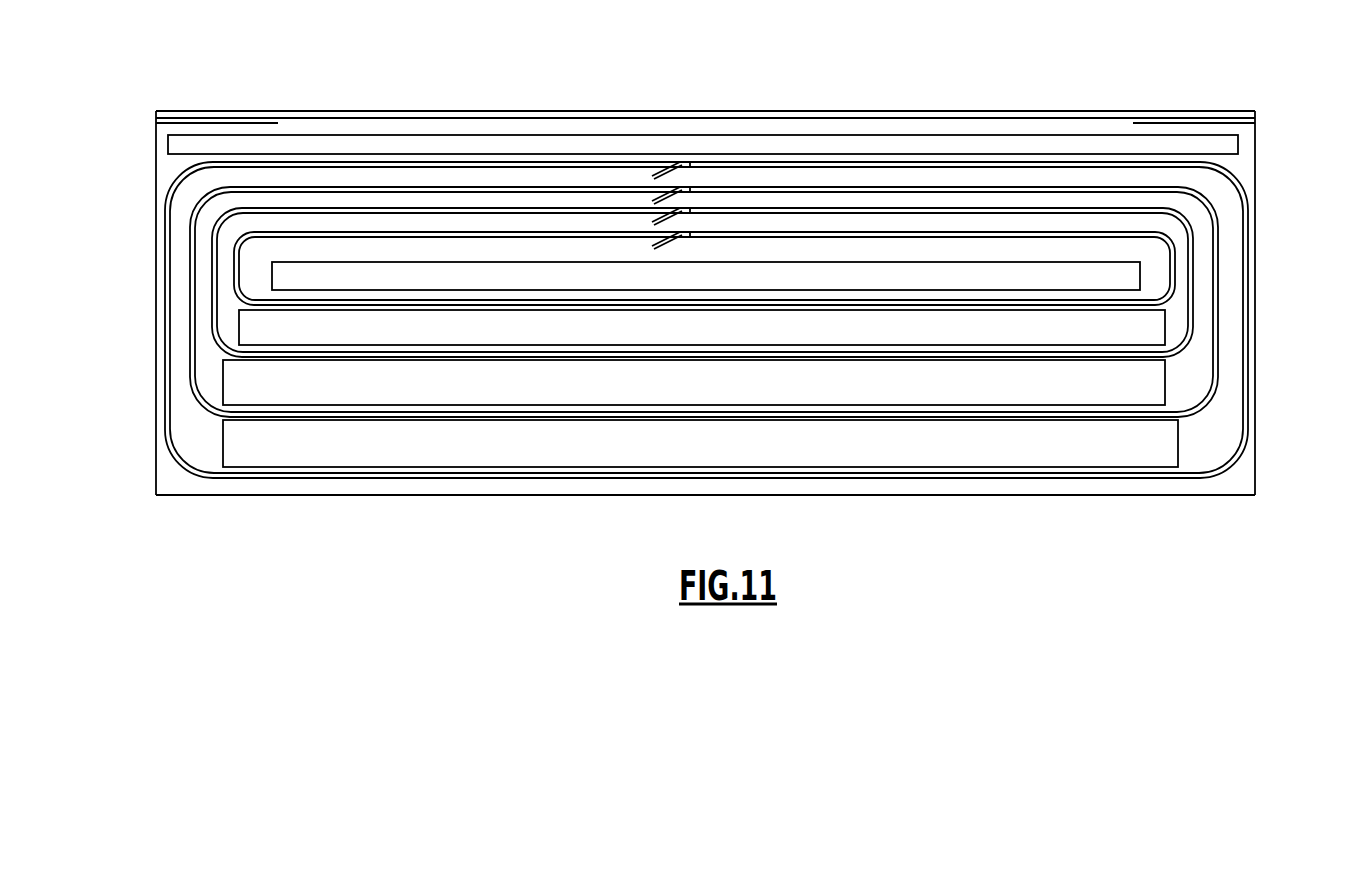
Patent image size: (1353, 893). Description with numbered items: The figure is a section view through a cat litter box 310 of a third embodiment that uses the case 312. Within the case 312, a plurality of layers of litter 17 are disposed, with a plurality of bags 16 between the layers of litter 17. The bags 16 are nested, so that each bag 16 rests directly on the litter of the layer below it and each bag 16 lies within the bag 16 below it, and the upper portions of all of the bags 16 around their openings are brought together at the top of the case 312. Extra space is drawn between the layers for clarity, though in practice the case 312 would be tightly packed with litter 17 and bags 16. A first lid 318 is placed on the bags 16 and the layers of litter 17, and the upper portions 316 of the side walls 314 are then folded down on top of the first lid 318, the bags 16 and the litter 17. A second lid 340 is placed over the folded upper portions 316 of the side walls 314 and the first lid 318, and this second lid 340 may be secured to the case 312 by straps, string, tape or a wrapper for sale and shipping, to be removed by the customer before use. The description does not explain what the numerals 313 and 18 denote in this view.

The cat litter box 310 is at (137, 81).
The case 312 is at (1256, 481).
The case bottom 313 is at (1132, 490).
The side walls 314 is at (157, 266).
The upper portions 316 is at (210, 121).
The first lid 318 is at (156, 122).
The second lid 340 is at (765, 111).
The separator / insulating plate 18 is at (930, 135).
The bags 16 is at (320, 237).
The layers of litter 17 is at (428, 445).